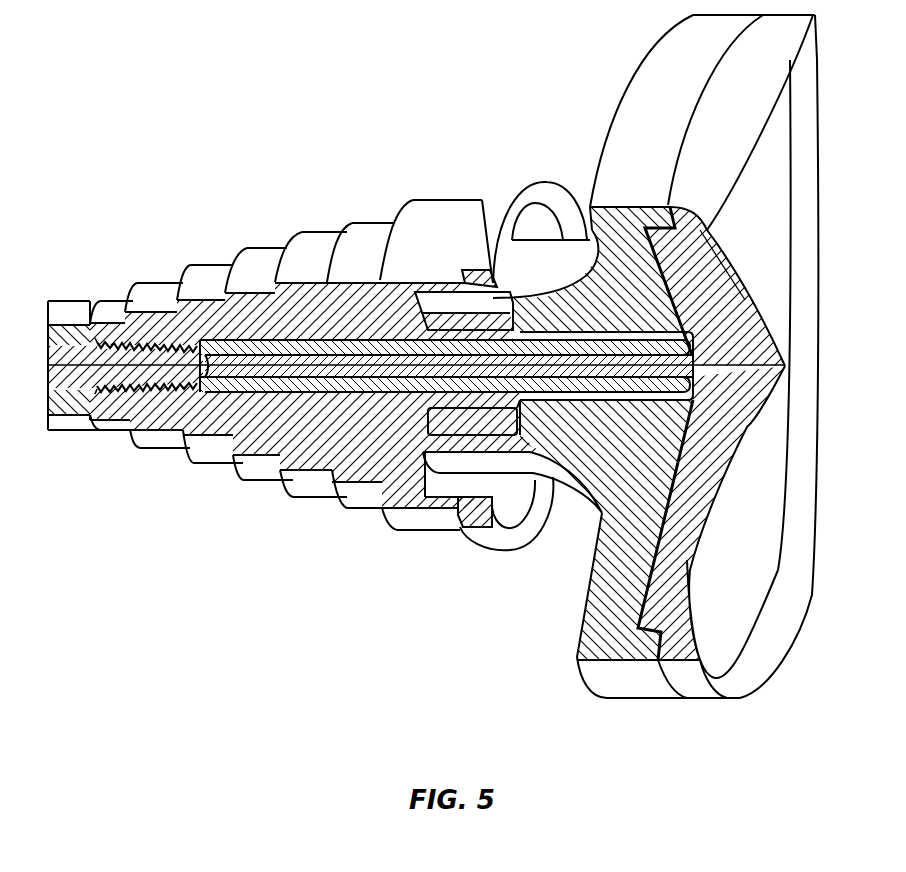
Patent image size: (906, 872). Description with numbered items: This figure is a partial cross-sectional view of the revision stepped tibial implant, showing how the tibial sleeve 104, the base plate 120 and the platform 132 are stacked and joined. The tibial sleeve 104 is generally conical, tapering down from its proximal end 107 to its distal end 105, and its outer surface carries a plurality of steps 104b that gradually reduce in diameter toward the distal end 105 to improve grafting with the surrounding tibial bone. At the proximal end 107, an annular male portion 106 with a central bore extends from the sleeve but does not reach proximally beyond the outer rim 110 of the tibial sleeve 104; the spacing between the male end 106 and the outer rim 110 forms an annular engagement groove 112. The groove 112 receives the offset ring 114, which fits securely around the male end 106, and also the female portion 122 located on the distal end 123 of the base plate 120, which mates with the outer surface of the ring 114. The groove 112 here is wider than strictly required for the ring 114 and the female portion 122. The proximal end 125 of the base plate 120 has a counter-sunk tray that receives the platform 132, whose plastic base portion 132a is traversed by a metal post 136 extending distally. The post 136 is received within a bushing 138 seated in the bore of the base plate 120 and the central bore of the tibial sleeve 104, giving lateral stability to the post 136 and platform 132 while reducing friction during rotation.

The tibial sleeve 104 is at (348, 467).
The steps 104b is at (417, 518).
The distal end 105 is at (146, 262).
The annular male portion 106 is at (535, 520).
The proximal end 107 is at (548, 170).
The outer rim 110 is at (507, 197).
The annular engagement groove 112 is at (507, 500).
The ring 114 is at (479, 312).
The base plate 120 is at (610, 683).
The female portion 122 is at (410, 497).
The distal end 123 is at (473, 548).
The proximal end 125 is at (627, 714).
The platform 132 is at (738, 682).
The base portion 132a is at (717, 273).
The post 136 is at (533, 395).
The bushing 138 is at (401, 345).